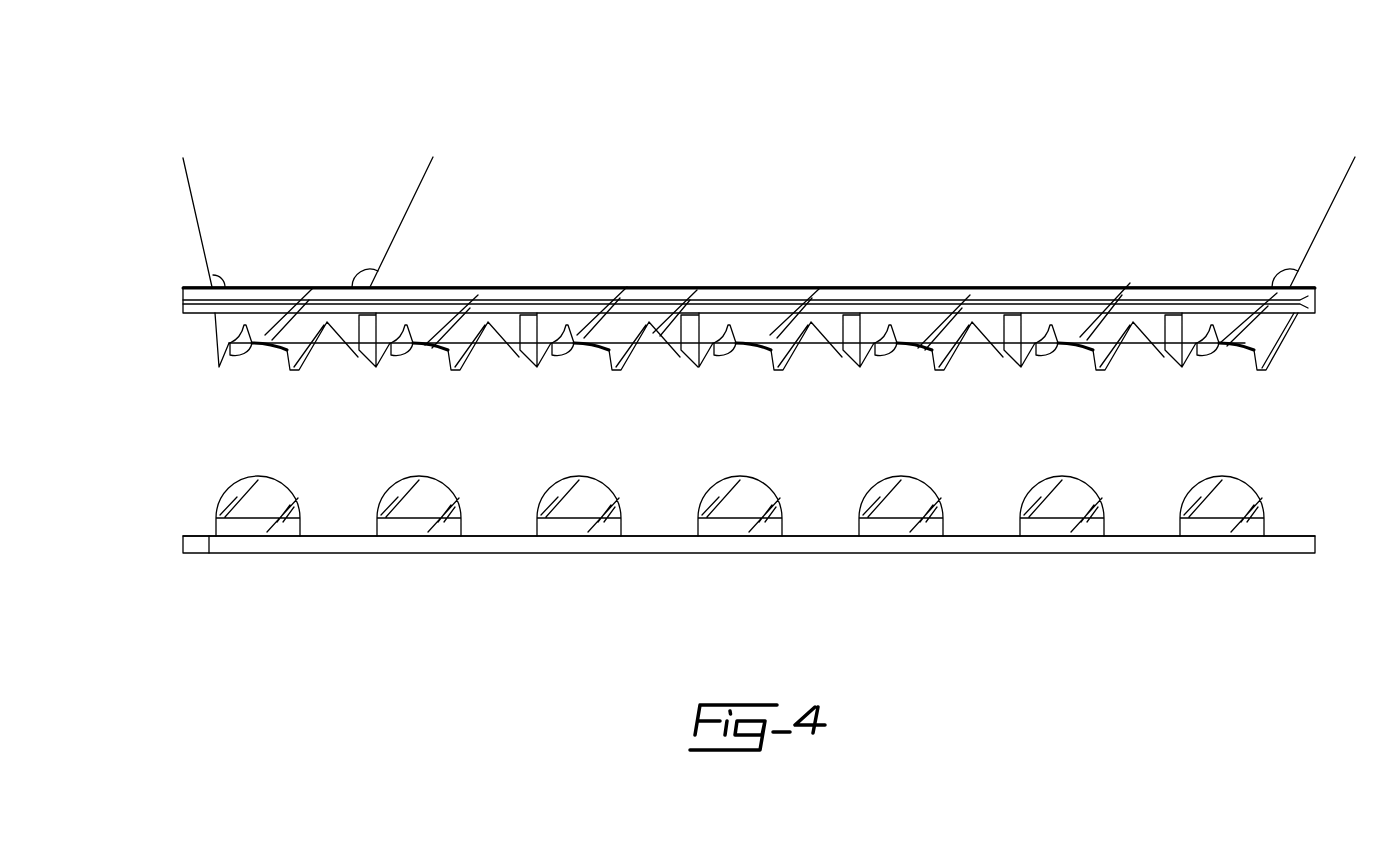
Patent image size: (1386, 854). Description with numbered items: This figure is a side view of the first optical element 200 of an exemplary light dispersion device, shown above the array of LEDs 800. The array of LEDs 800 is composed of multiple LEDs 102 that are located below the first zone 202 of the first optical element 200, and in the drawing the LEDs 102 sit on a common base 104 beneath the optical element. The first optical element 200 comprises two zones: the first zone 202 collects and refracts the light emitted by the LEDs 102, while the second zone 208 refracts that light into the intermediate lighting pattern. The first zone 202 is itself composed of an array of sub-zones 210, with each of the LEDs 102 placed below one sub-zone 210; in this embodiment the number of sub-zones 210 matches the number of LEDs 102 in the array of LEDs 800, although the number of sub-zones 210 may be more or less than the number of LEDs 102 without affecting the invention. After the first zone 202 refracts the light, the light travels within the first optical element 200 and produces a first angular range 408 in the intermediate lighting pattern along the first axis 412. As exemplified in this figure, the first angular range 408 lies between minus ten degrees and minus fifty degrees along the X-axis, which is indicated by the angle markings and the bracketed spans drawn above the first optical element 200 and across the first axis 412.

The first optical element 200 is at (145, 303).
The second zone 208 is at (198, 287).
The first zone 202 is at (1290, 334).
The sub-zone 210 is at (369, 377).
The first angular range 408 is at (190, 152).
The first axis 412 is at (183, 82).
The array of LEDs 800 is at (150, 514).
The circuit board 104 is at (233, 545).
The LEDs 102 is at (575, 528).